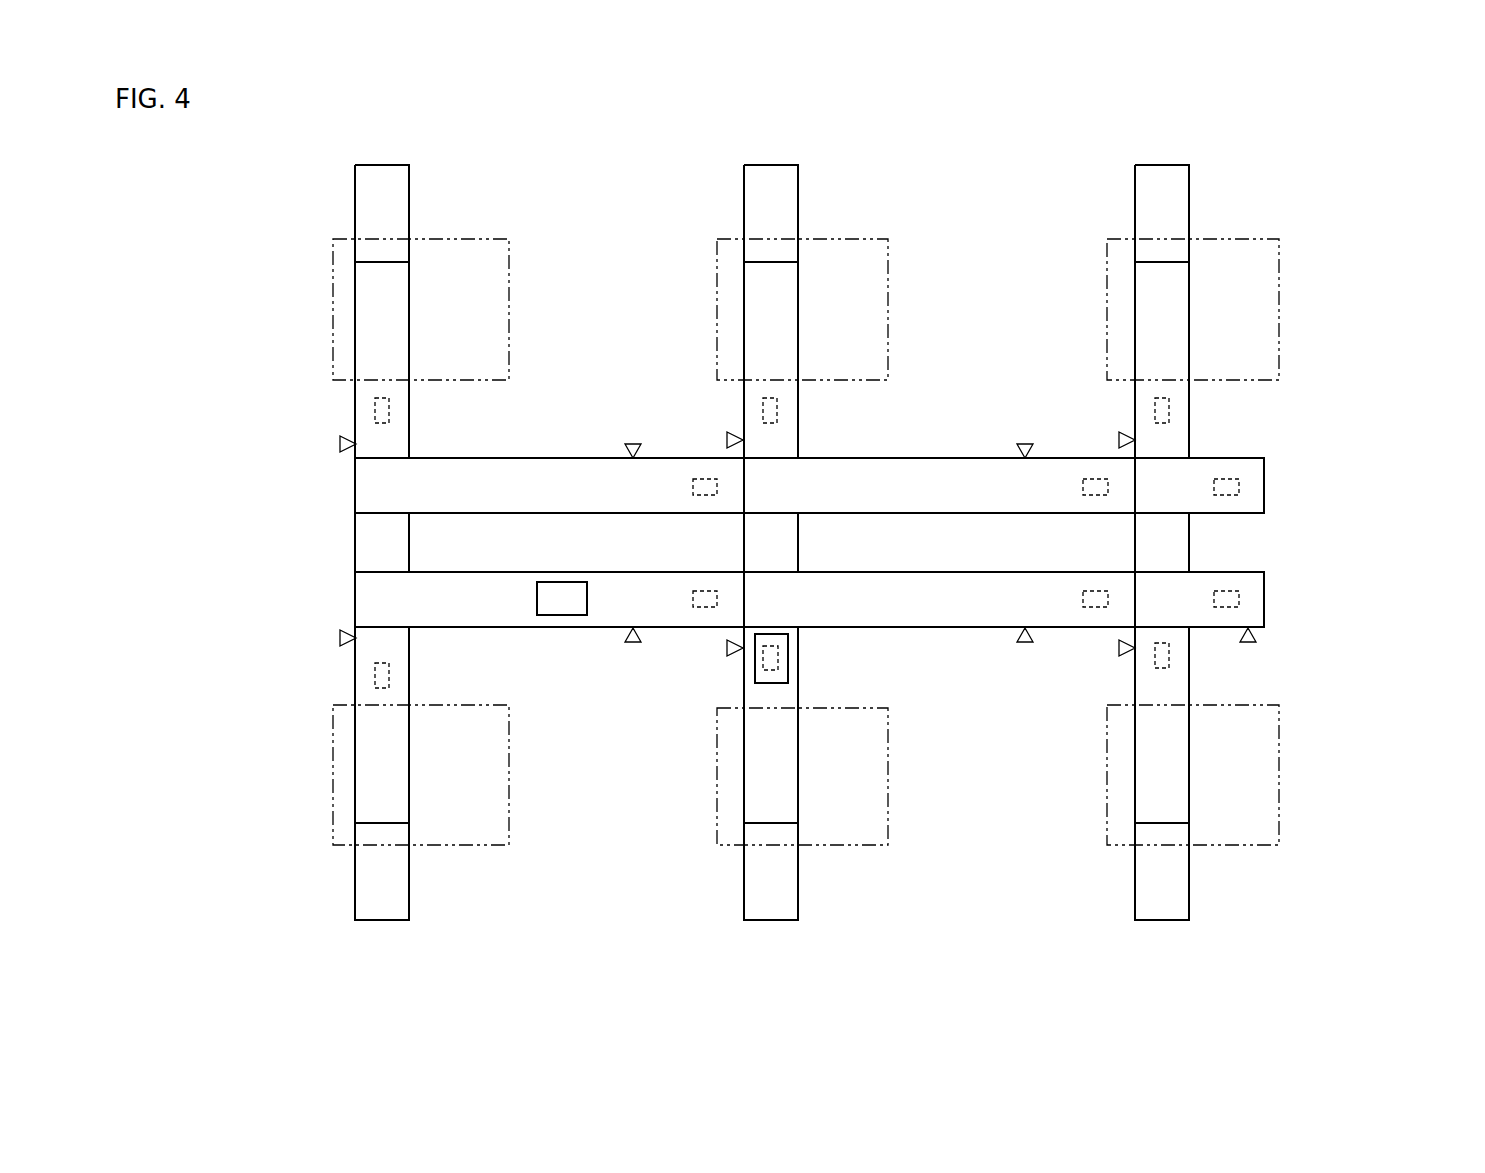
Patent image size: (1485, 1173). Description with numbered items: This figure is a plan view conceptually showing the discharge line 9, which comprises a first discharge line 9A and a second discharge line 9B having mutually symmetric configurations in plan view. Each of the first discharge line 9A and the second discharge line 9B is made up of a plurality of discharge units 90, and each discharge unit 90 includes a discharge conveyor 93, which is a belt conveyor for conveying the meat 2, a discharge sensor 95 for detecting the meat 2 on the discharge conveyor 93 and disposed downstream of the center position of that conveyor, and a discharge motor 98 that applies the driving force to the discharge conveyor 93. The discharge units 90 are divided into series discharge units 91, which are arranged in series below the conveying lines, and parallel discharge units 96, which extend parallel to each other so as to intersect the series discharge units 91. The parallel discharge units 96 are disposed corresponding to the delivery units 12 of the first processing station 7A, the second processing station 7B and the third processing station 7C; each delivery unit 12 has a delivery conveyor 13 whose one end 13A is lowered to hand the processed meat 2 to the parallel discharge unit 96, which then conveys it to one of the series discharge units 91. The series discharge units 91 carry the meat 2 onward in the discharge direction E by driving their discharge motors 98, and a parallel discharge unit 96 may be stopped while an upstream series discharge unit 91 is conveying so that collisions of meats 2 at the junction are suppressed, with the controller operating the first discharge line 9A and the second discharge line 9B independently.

The meat 2 is at (561, 617).
The first processing station 7A is at (484, 239).
The second processing station 7B is at (864, 239).
The third processing station 7C is at (1261, 239).
The discharge line 9 is at (1424, 450).
The first discharge line 9A is at (1280, 654).
The second discharge line 9B is at (1324, 364).
The delivery unit 12 is at (387, 162).
The delivery conveyor 13 is at (752, 201).
The one end 13A is at (780, 262).
The discharge unit 90 is at (1190, 317).
The series discharge unit 91 is at (332, 490).
The discharge conveyor 93 is at (368, 290).
The discharge sensor 95 is at (340, 444).
The parallel discharge unit 96 is at (432, 331).
The discharge motor 98 is at (374, 408).
The discharge direction E is at (432, 415).